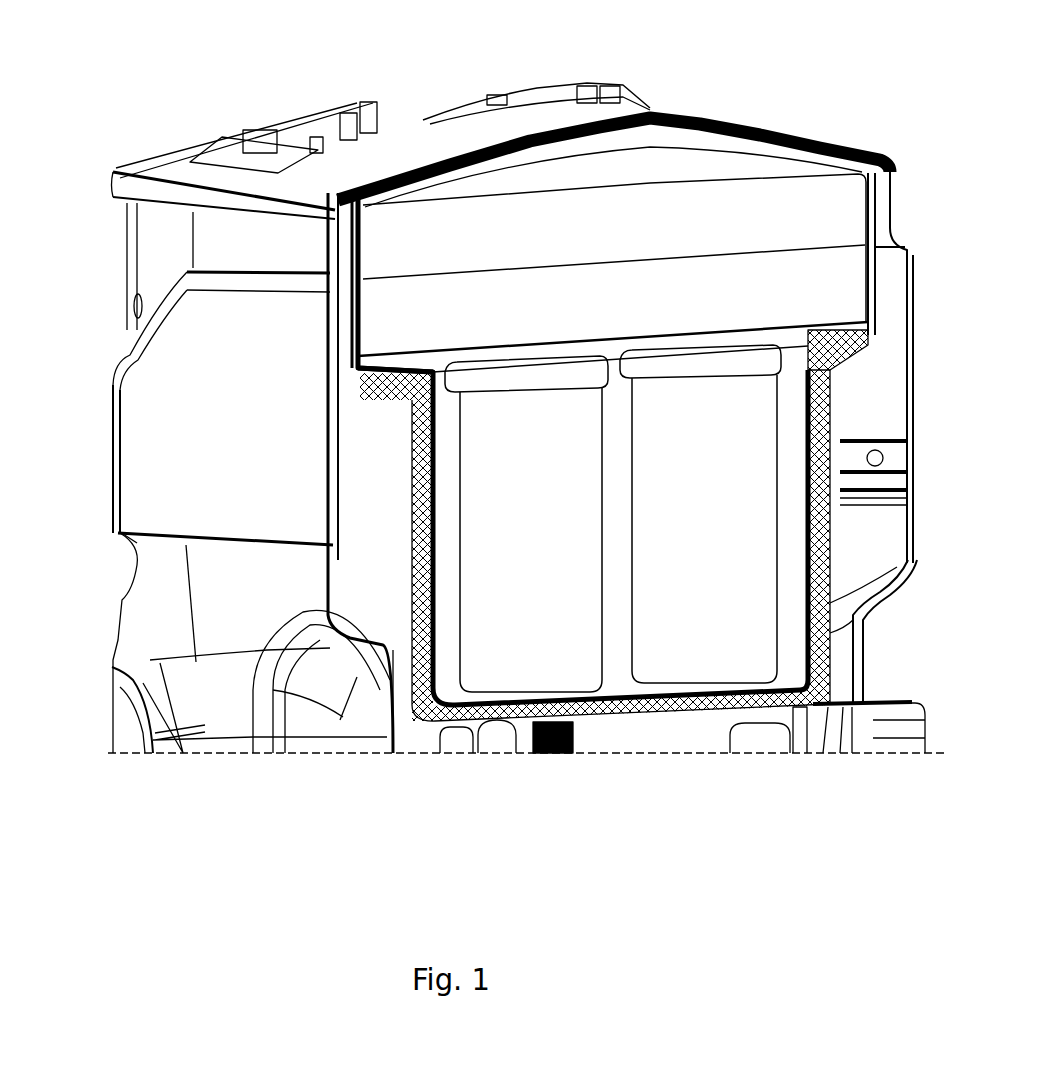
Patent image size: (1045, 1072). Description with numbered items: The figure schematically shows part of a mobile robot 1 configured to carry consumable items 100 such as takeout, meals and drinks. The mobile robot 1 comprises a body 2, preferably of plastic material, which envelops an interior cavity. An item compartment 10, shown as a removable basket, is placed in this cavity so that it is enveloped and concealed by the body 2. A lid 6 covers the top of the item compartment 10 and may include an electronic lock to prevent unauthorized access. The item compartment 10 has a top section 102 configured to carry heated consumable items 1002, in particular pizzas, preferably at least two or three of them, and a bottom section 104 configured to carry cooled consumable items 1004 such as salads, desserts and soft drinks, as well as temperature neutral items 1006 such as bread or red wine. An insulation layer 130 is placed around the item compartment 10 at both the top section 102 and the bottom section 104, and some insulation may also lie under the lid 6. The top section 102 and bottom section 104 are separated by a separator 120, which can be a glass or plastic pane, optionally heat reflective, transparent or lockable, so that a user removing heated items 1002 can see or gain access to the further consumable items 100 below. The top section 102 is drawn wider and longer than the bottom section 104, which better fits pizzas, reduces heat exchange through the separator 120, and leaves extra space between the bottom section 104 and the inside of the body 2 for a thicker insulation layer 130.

The mobile robot 1 is at (158, 822).
The body 2 is at (177, 505).
The lid 6 is at (432, 133).
The item compartment 10 is at (347, 400).
The consumable items 100 is at (613, 590).
The top section 102 is at (357, 323).
The bottom section 104 is at (393, 470).
The separator 120 is at (597, 340).
The insulation layer 130 is at (388, 570).
The heated consumable items 1002 is at (782, 213).
The cooled consumable items 1004 is at (522, 595).
The temperature neutral items 1006 is at (649, 619).